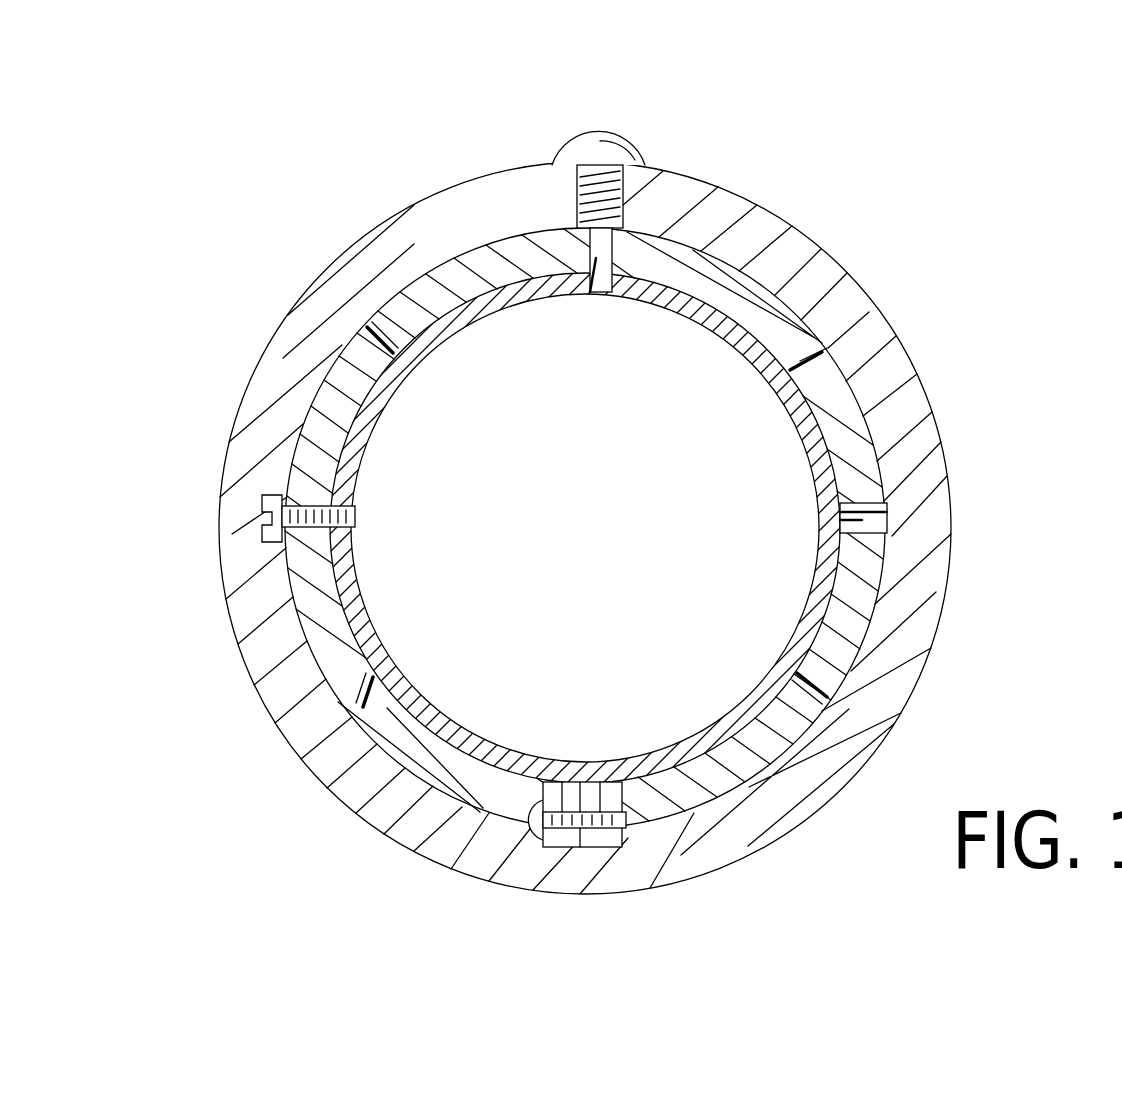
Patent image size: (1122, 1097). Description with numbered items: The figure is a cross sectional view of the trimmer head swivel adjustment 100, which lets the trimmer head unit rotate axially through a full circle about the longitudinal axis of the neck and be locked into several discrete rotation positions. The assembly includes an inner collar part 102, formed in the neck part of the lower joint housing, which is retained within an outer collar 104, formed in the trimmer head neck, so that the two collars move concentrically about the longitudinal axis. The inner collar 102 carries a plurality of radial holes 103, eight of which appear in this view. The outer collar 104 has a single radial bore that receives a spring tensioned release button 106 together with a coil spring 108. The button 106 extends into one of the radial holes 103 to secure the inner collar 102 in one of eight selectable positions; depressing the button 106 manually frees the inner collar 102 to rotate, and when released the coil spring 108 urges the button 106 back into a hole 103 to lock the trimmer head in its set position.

The trimmer head swivel adjustment 100 is at (659, 462).
The inner collar part 102 is at (460, 782).
The radial holes 103 is at (600, 257).
The outer collar part 104 is at (812, 280).
The release button 106 is at (583, 138).
The coil spring 108 is at (630, 195).